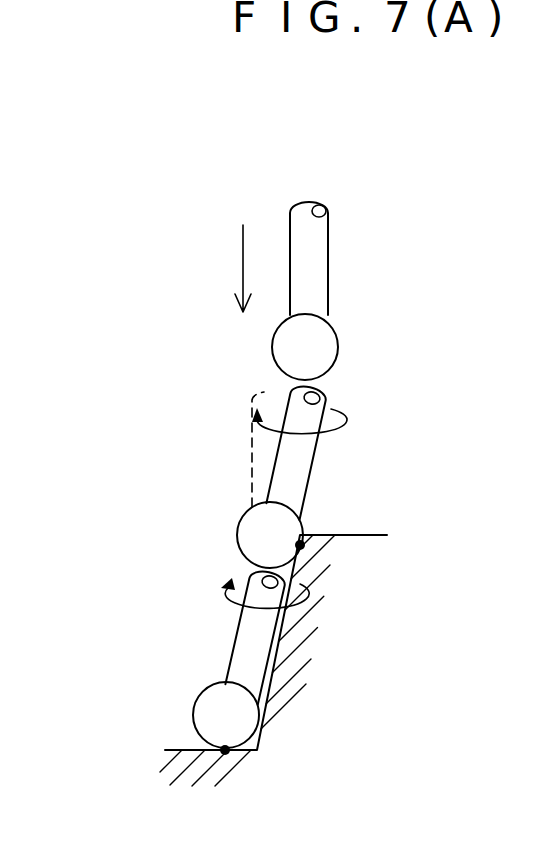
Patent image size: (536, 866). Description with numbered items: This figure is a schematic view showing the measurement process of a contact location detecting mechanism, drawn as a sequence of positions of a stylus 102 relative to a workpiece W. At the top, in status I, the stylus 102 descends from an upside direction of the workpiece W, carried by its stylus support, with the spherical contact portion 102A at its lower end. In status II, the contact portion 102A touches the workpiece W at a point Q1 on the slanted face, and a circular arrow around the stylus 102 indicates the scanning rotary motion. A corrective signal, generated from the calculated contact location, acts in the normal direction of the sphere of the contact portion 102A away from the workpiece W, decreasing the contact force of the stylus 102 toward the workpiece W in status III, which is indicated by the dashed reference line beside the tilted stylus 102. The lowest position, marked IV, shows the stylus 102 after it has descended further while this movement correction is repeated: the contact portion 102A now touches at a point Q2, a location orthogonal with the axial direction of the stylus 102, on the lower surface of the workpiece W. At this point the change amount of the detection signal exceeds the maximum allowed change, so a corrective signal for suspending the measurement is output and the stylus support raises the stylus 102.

The status I is at (329, 237).
The status II is at (320, 453).
The status III is at (248, 457).
The fourth step (pin rotation) IV is at (250, 620).
The stylus 102 is at (330, 267).
The contact portion 102A is at (327, 348).
The point Q1 is at (303, 540).
The point Q2 is at (228, 755).
The workpiece W is at (285, 686).